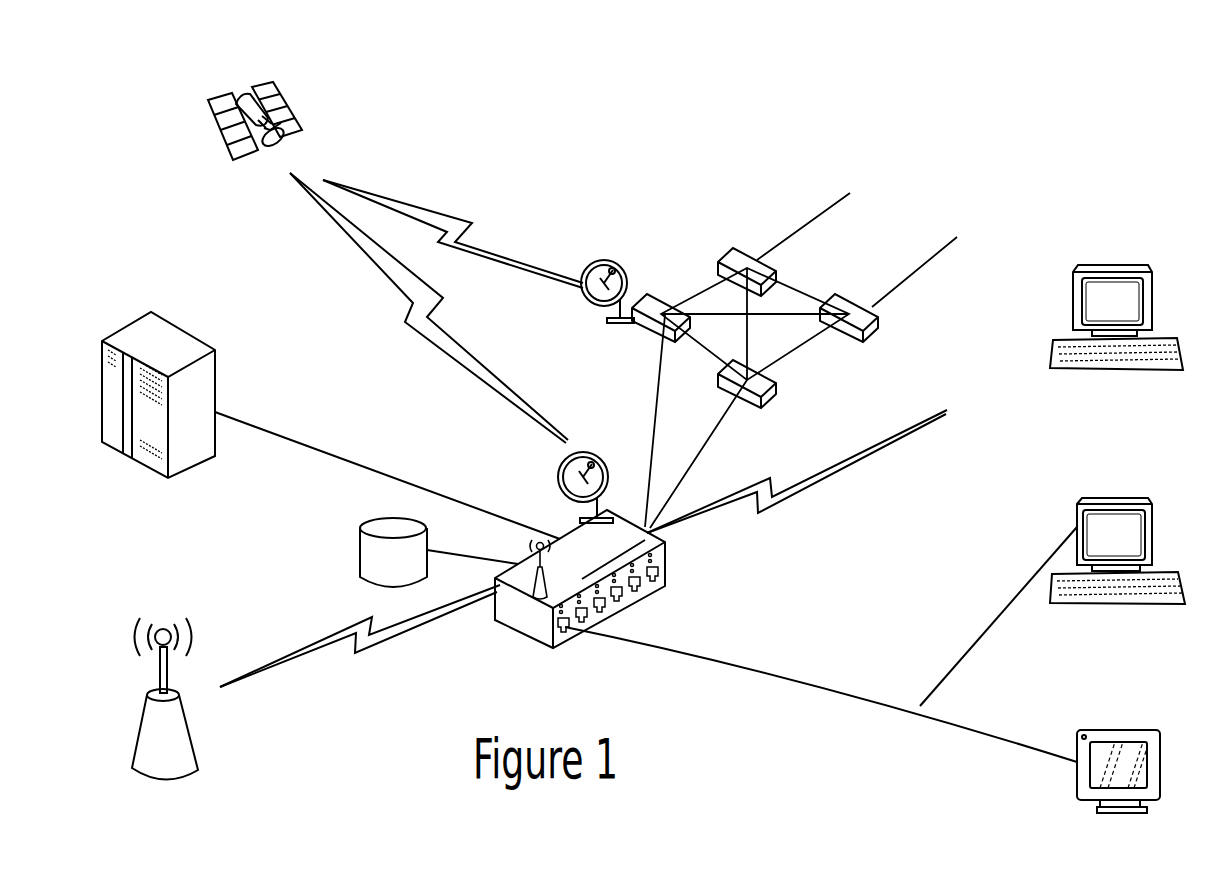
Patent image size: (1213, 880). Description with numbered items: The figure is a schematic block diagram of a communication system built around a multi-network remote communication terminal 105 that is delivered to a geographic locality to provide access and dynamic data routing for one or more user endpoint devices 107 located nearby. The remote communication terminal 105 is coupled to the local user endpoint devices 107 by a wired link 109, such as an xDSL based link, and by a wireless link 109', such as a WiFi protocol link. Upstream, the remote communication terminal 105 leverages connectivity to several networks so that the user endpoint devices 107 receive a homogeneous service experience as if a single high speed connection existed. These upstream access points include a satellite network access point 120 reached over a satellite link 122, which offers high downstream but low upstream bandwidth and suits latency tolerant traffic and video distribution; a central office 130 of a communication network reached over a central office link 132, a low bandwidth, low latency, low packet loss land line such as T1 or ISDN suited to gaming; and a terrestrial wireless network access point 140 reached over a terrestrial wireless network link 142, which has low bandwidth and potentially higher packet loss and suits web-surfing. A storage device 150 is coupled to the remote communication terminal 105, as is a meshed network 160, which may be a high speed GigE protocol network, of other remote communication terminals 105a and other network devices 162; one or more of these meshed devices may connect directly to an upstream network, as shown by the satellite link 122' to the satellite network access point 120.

The multi-network remote communication terminal 105 is at (668, 549).
The other remote communication terminal 105a is at (872, 308).
The user endpoint device 107 is at (1122, 262).
The wired link 109 is at (821, 644).
The wireless link 109' is at (797, 464).
The satellite network access point 120 is at (242, 92).
The satellite link 122 is at (451, 348).
The satellite link 122' is at (478, 251).
The central office 130 is at (128, 321).
The central office link 132 is at (403, 482).
The terrestrial wireless network access point 140 is at (137, 733).
The terrestrial wireless network link 142 is at (330, 636).
The storage device 150 is at (357, 542).
The meshed network 160 is at (814, 206).
The network device 162 is at (650, 298).